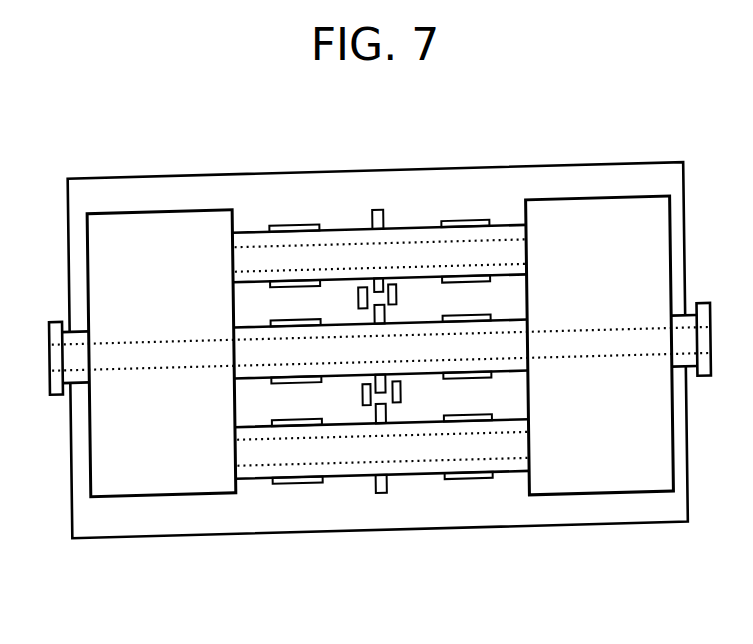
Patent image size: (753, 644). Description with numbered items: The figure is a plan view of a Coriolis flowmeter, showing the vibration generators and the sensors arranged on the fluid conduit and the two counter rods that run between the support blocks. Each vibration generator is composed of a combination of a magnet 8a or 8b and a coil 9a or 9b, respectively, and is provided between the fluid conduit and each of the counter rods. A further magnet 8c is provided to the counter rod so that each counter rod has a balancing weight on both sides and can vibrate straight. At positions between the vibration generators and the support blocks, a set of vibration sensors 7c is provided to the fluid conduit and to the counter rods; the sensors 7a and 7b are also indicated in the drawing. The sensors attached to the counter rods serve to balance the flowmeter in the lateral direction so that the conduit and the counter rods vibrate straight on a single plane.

The first lead terminal 7a is at (467, 317).
The second lead terminal 7b is at (297, 321).
The vibration sensors 7c is at (273, 283).
The magnet 8a is at (375, 318).
The magnet 8b is at (375, 386).
The magnet 8c is at (377, 210).
The coil 9a is at (362, 287).
The coil 9b is at (358, 408).